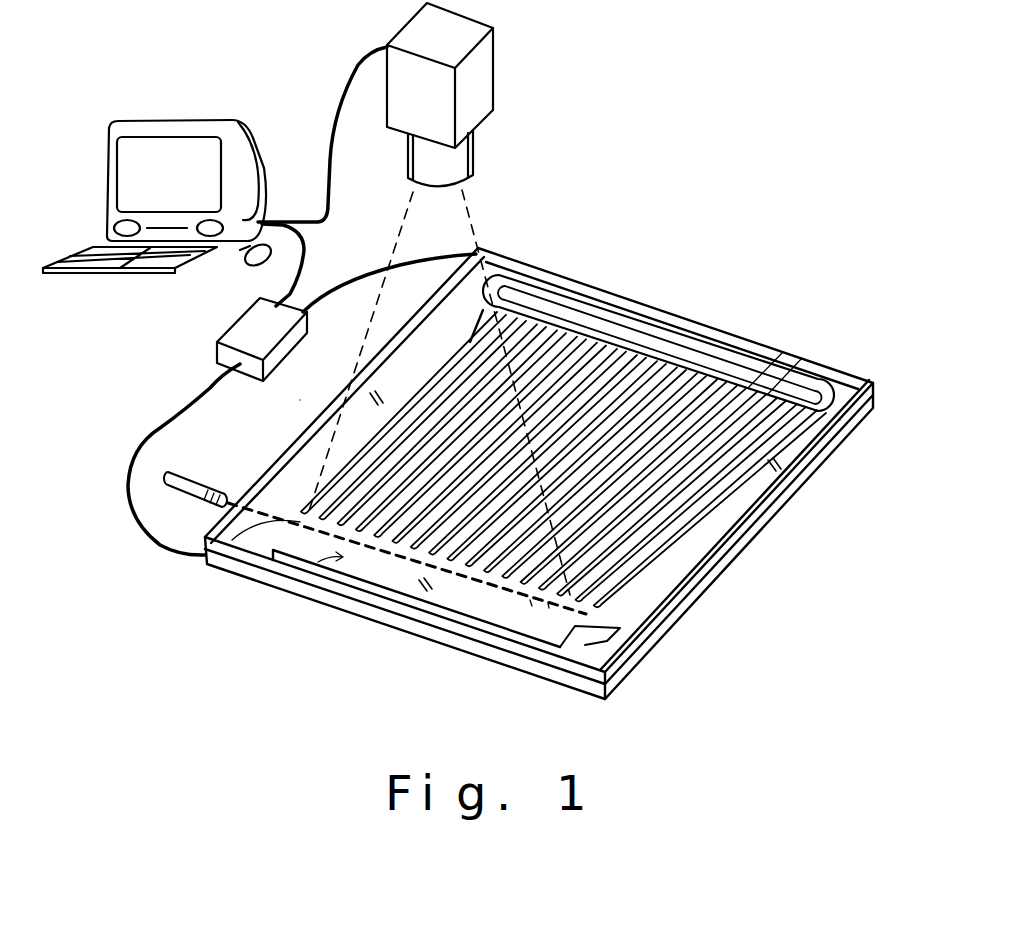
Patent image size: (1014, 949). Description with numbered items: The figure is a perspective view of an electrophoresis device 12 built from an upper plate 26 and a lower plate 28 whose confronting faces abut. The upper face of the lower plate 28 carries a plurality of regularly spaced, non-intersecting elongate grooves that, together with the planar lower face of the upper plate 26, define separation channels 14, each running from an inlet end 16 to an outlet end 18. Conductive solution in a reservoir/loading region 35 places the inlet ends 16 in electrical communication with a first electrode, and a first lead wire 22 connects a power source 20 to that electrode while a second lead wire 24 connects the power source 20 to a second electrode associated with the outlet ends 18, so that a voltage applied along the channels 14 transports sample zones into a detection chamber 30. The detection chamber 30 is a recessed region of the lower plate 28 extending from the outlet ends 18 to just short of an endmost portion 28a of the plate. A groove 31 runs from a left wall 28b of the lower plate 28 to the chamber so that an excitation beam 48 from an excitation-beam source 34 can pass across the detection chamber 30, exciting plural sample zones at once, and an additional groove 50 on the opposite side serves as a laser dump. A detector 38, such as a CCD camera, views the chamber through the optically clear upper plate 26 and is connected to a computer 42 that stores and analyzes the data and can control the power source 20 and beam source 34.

The electrophoresis device 12 is at (768, 216).
The separation channels 14 is at (640, 492).
The inlet end 16 is at (783, 356).
The outlet end 18 is at (566, 608).
The power source 20 is at (250, 324).
The first lead wire 22 is at (373, 271).
The second lead wire 24 is at (177, 417).
The upper plate 26 is at (808, 428).
The lower plate 28 is at (826, 462).
The endmost portion of the lower plate 28a is at (403, 620).
The left wall of the lower plate 28b is at (293, 450).
The detection chamber 30 is at (305, 568).
The groove 31 is at (222, 557).
The excitation-beam source 34 is at (199, 483).
The reservoir/loading region 35 is at (548, 318).
The detector 38 is at (525, 103).
The computer 42 is at (103, 117).
The excitation beam 48 is at (480, 617).
The additional groove 50 is at (608, 628).